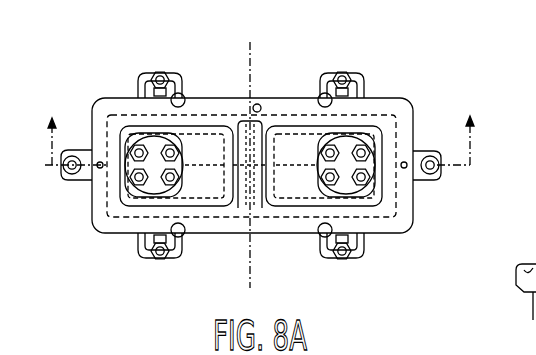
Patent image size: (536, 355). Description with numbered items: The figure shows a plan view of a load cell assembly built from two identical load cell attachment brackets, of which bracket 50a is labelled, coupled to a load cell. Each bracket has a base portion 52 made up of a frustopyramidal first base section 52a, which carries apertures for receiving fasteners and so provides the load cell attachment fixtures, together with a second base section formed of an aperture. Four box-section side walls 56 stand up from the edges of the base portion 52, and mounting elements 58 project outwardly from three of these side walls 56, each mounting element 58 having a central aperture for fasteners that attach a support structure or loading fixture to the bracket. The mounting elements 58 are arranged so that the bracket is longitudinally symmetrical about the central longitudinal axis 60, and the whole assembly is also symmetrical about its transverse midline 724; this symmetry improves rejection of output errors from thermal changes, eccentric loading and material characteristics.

The transverse midline 724 is at (245, 62).
The side walls 56 is at (289, 106).
The base portion 52 is at (232, 205).
The first base section 52a is at (188, 145).
The load cell attachment bracket 50a is at (258, 103).
The mounting elements 58 is at (158, 72).
The central longitudinal axis 60 is at (461, 172).